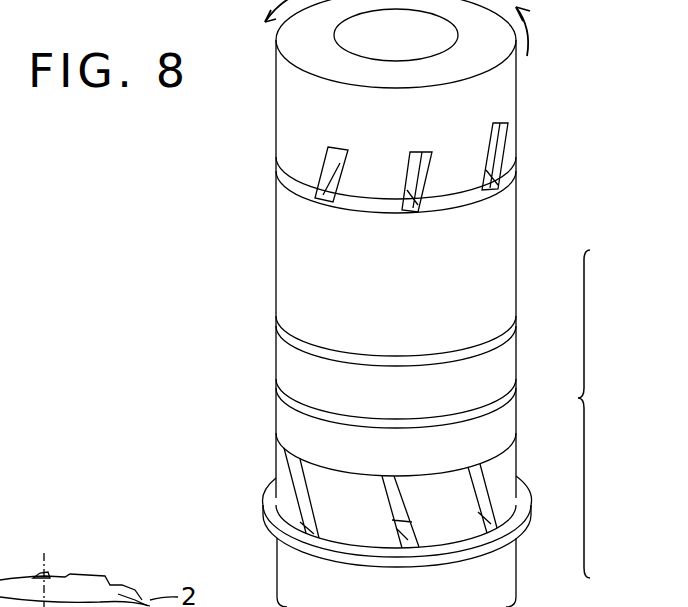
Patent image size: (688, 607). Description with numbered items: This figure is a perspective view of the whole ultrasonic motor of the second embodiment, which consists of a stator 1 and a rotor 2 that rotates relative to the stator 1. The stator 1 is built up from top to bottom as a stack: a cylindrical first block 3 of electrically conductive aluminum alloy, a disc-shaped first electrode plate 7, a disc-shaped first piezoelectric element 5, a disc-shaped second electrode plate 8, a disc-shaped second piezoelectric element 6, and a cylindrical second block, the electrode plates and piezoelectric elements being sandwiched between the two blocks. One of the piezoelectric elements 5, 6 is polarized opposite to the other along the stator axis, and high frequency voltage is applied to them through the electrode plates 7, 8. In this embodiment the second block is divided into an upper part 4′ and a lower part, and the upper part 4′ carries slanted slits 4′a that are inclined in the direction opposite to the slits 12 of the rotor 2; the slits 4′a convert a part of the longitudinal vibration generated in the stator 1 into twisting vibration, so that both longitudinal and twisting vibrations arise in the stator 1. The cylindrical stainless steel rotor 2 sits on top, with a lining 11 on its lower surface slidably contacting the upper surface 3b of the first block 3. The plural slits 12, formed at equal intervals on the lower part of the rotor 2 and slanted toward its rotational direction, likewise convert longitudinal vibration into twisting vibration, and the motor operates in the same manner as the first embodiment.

The stator 1 is at (600, 414).
The rotor 2 is at (500, 86).
The first block 3 is at (500, 264).
The upper surface of first block 3b is at (497, 193).
The upper part of second block 4′ is at (500, 460).
The slanted slits 4′a is at (302, 492).
The first piezoelectric element 5 is at (500, 362).
The second piezoelectric element 6 is at (500, 423).
The first electrode plate 7 is at (508, 327).
The second electrode plate 8 is at (506, 393).
The lining 11 is at (500, 180).
The slits 12 is at (333, 163).